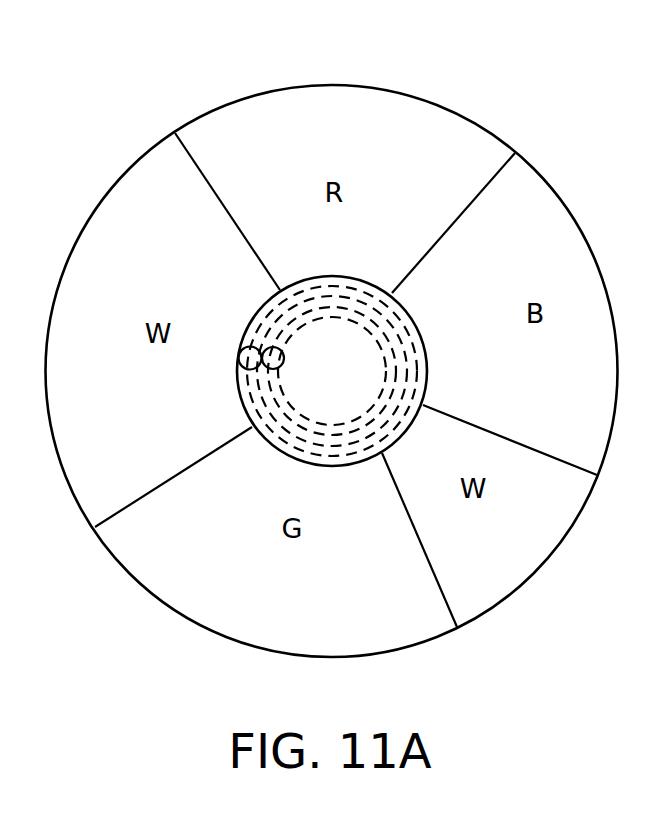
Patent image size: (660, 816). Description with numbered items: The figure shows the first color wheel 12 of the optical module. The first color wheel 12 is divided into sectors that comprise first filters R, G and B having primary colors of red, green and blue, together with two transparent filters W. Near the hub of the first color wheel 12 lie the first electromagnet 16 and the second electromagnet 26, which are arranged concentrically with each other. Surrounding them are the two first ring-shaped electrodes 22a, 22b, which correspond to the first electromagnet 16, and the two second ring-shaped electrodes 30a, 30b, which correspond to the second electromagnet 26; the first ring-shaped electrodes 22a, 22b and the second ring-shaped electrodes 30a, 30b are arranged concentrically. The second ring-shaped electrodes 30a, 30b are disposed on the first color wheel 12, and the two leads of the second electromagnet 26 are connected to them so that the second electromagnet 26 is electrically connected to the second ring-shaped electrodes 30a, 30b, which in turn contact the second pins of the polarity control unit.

The first color wheel 12 is at (424, 85).
The first electromagnet 16 is at (239, 357).
The second electromagnet 26 is at (272, 347).
The first ring-shaped electrode 22a is at (415, 345).
The first ring-shaped electrode 22b is at (408, 372).
The second ring-shaped electrode 30a is at (345, 311).
The second ring-shaped electrode 30b is at (329, 316).